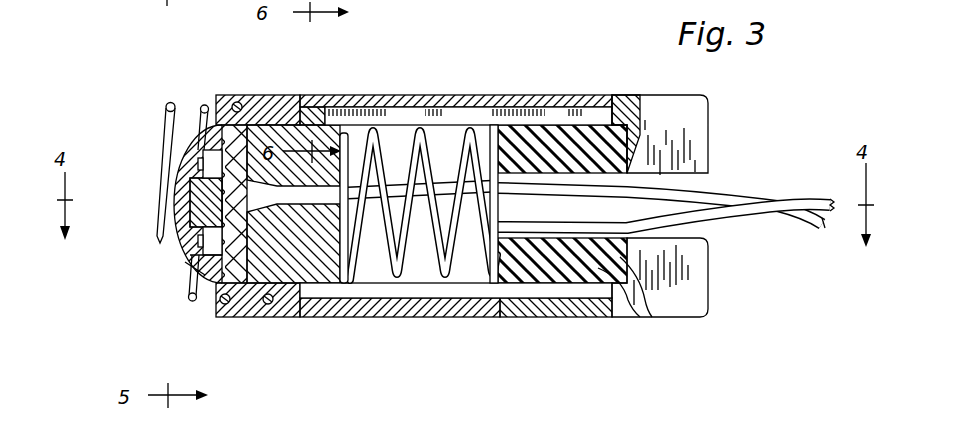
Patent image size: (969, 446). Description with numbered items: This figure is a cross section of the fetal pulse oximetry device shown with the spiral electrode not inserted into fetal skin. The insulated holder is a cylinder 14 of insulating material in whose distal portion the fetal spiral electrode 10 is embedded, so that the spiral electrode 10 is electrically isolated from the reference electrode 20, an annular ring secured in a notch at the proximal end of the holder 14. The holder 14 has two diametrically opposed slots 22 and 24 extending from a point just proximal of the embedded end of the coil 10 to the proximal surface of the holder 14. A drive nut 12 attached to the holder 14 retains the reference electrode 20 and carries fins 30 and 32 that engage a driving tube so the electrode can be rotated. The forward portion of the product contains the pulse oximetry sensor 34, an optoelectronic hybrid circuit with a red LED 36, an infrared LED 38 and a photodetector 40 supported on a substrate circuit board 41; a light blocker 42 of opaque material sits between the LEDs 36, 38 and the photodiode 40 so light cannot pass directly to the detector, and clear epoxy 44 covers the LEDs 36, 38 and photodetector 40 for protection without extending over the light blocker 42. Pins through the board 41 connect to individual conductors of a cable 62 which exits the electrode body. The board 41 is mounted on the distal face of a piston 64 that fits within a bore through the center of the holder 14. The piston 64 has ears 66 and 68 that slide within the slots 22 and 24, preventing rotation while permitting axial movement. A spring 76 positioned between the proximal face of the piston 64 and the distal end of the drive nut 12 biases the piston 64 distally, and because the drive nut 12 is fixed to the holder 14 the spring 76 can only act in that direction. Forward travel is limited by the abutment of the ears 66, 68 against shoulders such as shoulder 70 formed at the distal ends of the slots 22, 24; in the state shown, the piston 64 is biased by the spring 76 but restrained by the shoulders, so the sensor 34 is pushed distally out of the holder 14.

The fetal spiral electrode 10 is at (165, 107).
The drive nut 12 is at (624, 306).
The cylindrical holder 14 is at (470, 304).
The reference electrode 20 is at (558, 304).
The slot 22 is at (405, 115).
The slot 24 is at (368, 290).
The fin 30 is at (688, 278).
The fin 32 is at (690, 128).
The pulse oximetry sensor 34 is at (172, 181).
The red LED 36 is at (190, 256).
The infrared LED 38 is at (186, 287).
The photodetector 40 is at (200, 148).
The substrate circuit board 41 is at (205, 307).
The light blocker 42 is at (185, 198).
The clear epoxy 44 is at (200, 158).
The cable 62 is at (767, 220).
The piston 64 is at (258, 286).
The ear 66 is at (332, 104).
The ear 68 is at (306, 300).
The shoulder 70 is at (314, 107).
The spring 76 is at (428, 137).